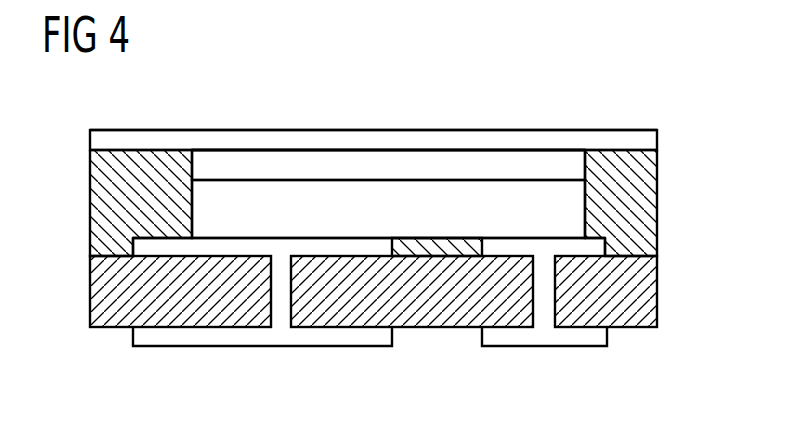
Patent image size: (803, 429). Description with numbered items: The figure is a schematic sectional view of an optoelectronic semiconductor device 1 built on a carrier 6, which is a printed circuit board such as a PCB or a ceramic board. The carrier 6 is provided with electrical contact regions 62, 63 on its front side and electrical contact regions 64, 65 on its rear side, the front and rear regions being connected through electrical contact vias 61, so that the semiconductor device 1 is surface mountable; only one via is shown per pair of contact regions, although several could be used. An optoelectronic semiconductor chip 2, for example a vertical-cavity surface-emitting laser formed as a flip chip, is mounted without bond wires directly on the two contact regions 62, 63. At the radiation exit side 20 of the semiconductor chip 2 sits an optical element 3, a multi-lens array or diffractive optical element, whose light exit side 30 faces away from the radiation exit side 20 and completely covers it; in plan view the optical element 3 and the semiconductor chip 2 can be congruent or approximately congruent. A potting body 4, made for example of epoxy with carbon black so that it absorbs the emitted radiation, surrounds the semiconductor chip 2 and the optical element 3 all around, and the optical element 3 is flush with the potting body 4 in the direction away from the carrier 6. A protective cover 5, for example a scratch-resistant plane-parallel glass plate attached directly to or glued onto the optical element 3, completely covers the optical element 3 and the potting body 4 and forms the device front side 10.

The optoelectronic semiconductor device 1 is at (590, 80).
The optoelectronic semiconductor chip 2 is at (233, 192).
The optical element 3 is at (545, 157).
The potting body 4 is at (645, 207).
The protective cover 5 is at (645, 142).
The carrier 6 is at (648, 292).
The device front side 10 is at (464, 123).
The radiation exit side 20 is at (377, 185).
The light exit side 30 is at (313, 148).
The electrical contact vias 61 is at (279, 312).
The electrical contact region 62 is at (137, 250).
The electrical contact region 63 is at (597, 248).
The electrical contact region 64 is at (193, 338).
The electrical contact region 65 is at (577, 337).